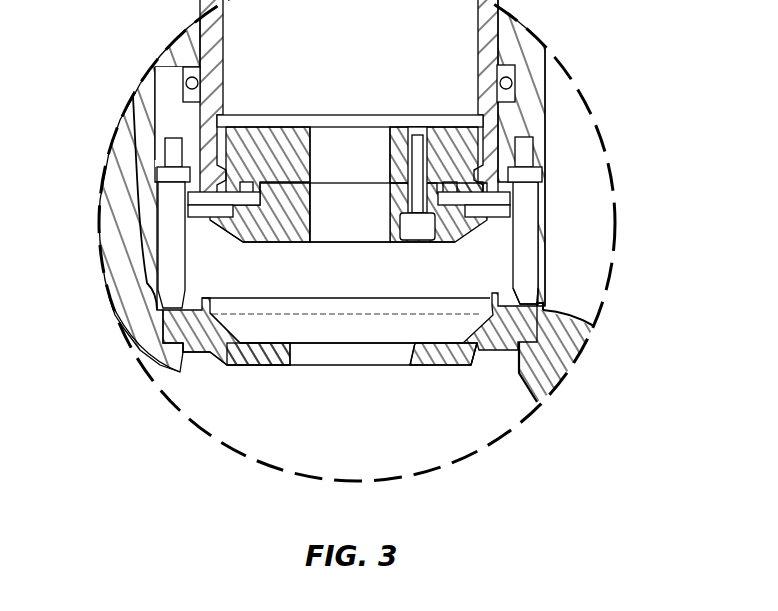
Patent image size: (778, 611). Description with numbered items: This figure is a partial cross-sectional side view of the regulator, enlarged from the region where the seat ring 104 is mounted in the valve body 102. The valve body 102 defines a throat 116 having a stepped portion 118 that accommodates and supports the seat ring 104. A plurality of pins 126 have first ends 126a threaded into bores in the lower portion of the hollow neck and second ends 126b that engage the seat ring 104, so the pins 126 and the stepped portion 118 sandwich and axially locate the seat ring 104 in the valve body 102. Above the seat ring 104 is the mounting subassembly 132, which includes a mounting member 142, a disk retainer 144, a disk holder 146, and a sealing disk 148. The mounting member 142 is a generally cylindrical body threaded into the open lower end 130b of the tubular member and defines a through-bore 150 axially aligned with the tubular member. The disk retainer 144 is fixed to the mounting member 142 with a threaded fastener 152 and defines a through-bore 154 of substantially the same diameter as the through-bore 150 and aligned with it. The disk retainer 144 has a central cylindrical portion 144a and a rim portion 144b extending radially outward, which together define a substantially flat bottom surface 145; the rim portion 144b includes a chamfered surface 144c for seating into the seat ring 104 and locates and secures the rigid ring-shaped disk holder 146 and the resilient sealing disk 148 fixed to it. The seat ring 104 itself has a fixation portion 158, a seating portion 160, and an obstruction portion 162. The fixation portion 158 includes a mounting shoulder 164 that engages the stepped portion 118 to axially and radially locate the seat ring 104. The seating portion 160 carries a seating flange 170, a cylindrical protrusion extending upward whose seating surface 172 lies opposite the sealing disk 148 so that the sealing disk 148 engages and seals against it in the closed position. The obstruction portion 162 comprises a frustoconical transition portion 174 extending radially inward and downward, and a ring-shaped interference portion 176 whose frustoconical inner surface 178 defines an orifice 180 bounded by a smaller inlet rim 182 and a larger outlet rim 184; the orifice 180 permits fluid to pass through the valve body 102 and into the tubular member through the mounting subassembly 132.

The valve body 102 is at (575, 337).
The seat ring 104 is at (222, 378).
The throat 116 is at (528, 348).
The stepped portion 118 is at (545, 306).
The pins 126 is at (528, 238).
The first ends 126a is at (528, 190).
The second ends 126b is at (528, 297).
The open lower end 130b is at (212, 44).
The mounting subassembly 132 is at (458, 115).
The mounting member 142 is at (240, 135).
The disk retainer 144 is at (282, 230).
The central cylindrical portion 144a is at (288, 200).
The rim portion 144b is at (220, 230).
The chamfered surface 144c is at (487, 228).
The bottom surface 145 is at (378, 243).
The disk holder 146 is at (190, 194).
The sealing disk 148 is at (192, 212).
The through-bore 150 is at (313, 147).
The fastener 152 is at (413, 238).
The through-bore 154 is at (313, 233).
The fixation portion 158 is at (160, 331).
The seating portion 160 is at (207, 333).
The obstruction portion 162 is at (260, 373).
The mounting shoulder 164 is at (178, 350).
The seating flange 170 is at (488, 306).
The seating surface 172 is at (195, 290).
The transition portion 174 is at (480, 366).
The interference portion 176 is at (428, 364).
The inner surface 178 is at (412, 352).
The orifice 180 is at (333, 357).
The inlet rim 182 is at (290, 368).
The outlet rim 184 is at (284, 342).